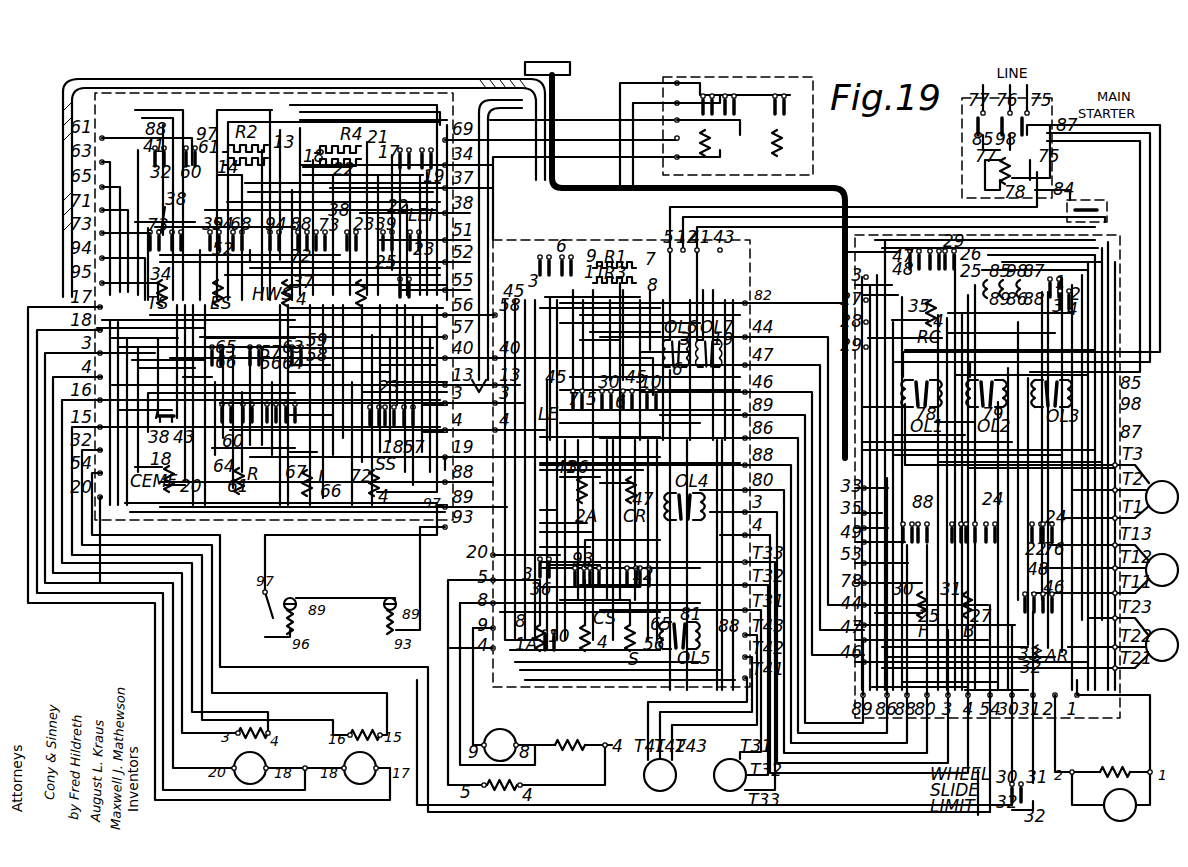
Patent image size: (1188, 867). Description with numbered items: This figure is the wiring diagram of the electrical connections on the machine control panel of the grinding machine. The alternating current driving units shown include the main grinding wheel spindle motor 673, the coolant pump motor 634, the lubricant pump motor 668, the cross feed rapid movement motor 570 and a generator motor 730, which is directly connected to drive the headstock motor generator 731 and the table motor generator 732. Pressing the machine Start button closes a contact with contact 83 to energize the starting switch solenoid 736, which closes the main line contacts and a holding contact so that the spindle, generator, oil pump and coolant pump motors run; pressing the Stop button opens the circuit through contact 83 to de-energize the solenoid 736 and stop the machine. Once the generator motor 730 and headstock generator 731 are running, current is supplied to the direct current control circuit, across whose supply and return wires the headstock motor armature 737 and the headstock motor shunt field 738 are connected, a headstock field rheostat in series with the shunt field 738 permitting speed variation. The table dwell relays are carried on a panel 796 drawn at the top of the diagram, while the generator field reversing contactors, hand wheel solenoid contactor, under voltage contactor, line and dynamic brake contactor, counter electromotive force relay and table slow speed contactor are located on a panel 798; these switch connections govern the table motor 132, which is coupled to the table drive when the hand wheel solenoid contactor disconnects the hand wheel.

The panel 798 is at (244, 97).
The panel 796 is at (804, 170).
The starting switch solenoid 736 is at (1000, 172).
The headstock motor armature 737 is at (500, 745).
The headstock motor shunt field 738 is at (522, 783).
The table motor 132 is at (250, 768).
The table motor generator 732 is at (360, 768).
The coolant pump motor 634 is at (660, 775).
The lubricant pump motor 668 is at (730, 775).
The main grinding wheel spindle motor 673 is at (1162, 497).
The generator motor 730 is at (1162, 570).
The cross feed rapid movement motor 570 is at (1162, 645).
The headstock motor generator 731 is at (1120, 805).
The contact 83 is at (1100, 218).